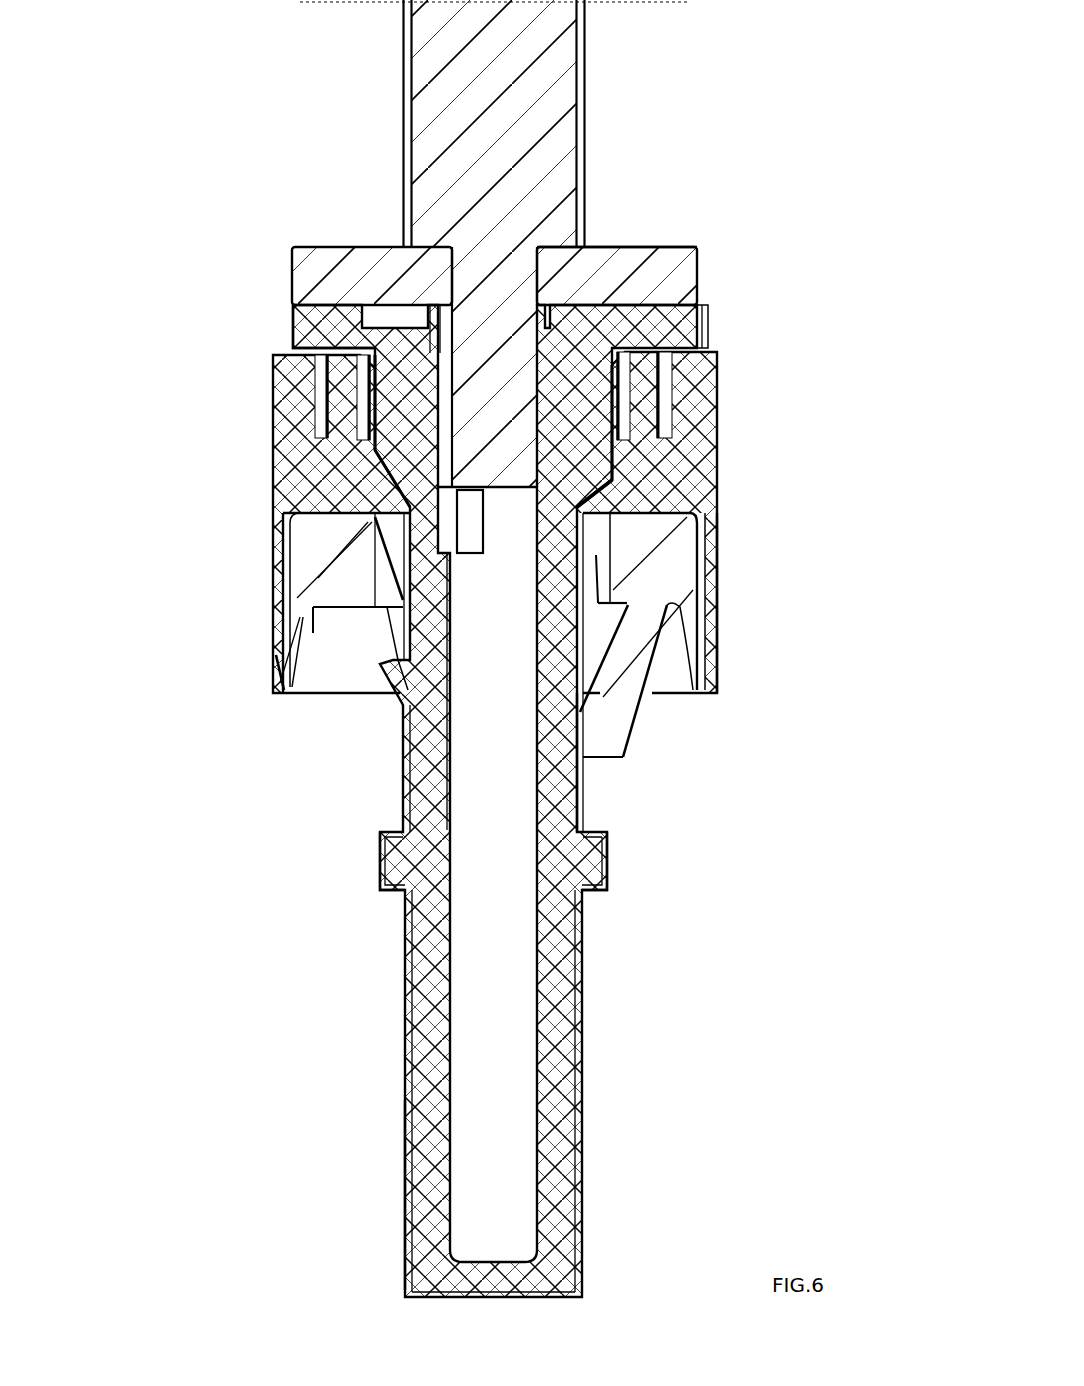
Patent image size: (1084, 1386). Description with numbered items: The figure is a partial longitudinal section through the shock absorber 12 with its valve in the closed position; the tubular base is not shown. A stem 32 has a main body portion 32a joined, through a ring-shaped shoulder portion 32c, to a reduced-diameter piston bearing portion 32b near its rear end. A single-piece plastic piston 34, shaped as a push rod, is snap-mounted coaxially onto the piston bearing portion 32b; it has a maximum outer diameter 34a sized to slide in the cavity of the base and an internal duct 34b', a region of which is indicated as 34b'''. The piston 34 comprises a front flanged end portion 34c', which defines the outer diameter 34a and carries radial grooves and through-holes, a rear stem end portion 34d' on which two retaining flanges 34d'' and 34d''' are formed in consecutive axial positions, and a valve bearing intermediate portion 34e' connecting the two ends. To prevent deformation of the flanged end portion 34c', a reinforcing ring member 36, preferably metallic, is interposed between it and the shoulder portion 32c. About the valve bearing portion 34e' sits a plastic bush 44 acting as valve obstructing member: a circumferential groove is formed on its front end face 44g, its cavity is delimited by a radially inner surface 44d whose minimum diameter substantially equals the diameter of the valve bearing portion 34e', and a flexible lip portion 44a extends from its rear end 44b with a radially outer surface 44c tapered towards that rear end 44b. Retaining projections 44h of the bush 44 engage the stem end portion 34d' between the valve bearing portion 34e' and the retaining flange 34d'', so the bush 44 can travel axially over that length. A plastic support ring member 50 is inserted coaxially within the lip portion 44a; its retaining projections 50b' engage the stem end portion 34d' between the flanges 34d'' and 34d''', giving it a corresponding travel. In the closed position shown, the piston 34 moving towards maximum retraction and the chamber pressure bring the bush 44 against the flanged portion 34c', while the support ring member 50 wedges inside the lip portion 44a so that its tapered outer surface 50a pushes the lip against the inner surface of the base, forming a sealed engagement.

The sensor assembly 12 is at (758, 228).
The stem 32 is at (398, 65).
The main body portion 32a is at (550, 102).
The piston bearing portion 32b is at (508, 312).
The ring-shaped shoulder portion 32c is at (578, 263).
The piston 34 is at (276, 308).
The maximum outer diameter 34a is at (708, 330).
The duct 34b' is at (306, 874).
The body upper bore portion 34b''' is at (242, 431).
The flanged end portion 34c' is at (226, 317).
The stem end portion 34d' is at (262, 1093).
The retaining flange 34d'' is at (730, 762).
The retaining flange 34d''' is at (635, 861).
The valve bearing intermediate portion 34e' is at (727, 436).
The reinforcing ring member 36 is at (290, 247).
The bush 44 is at (250, 492).
The flexible lip portion 44a is at (716, 630).
The rear end 44b is at (285, 540).
The radially outer surface 44c is at (695, 575).
The radially inner surface 44d is at (615, 479).
The front end face 44g is at (275, 347).
The retaining projections 44h is at (612, 560).
The support ring member 50 is at (262, 650).
The radially outer surface 50a is at (268, 672).
The retaining projections 50b' is at (731, 701).